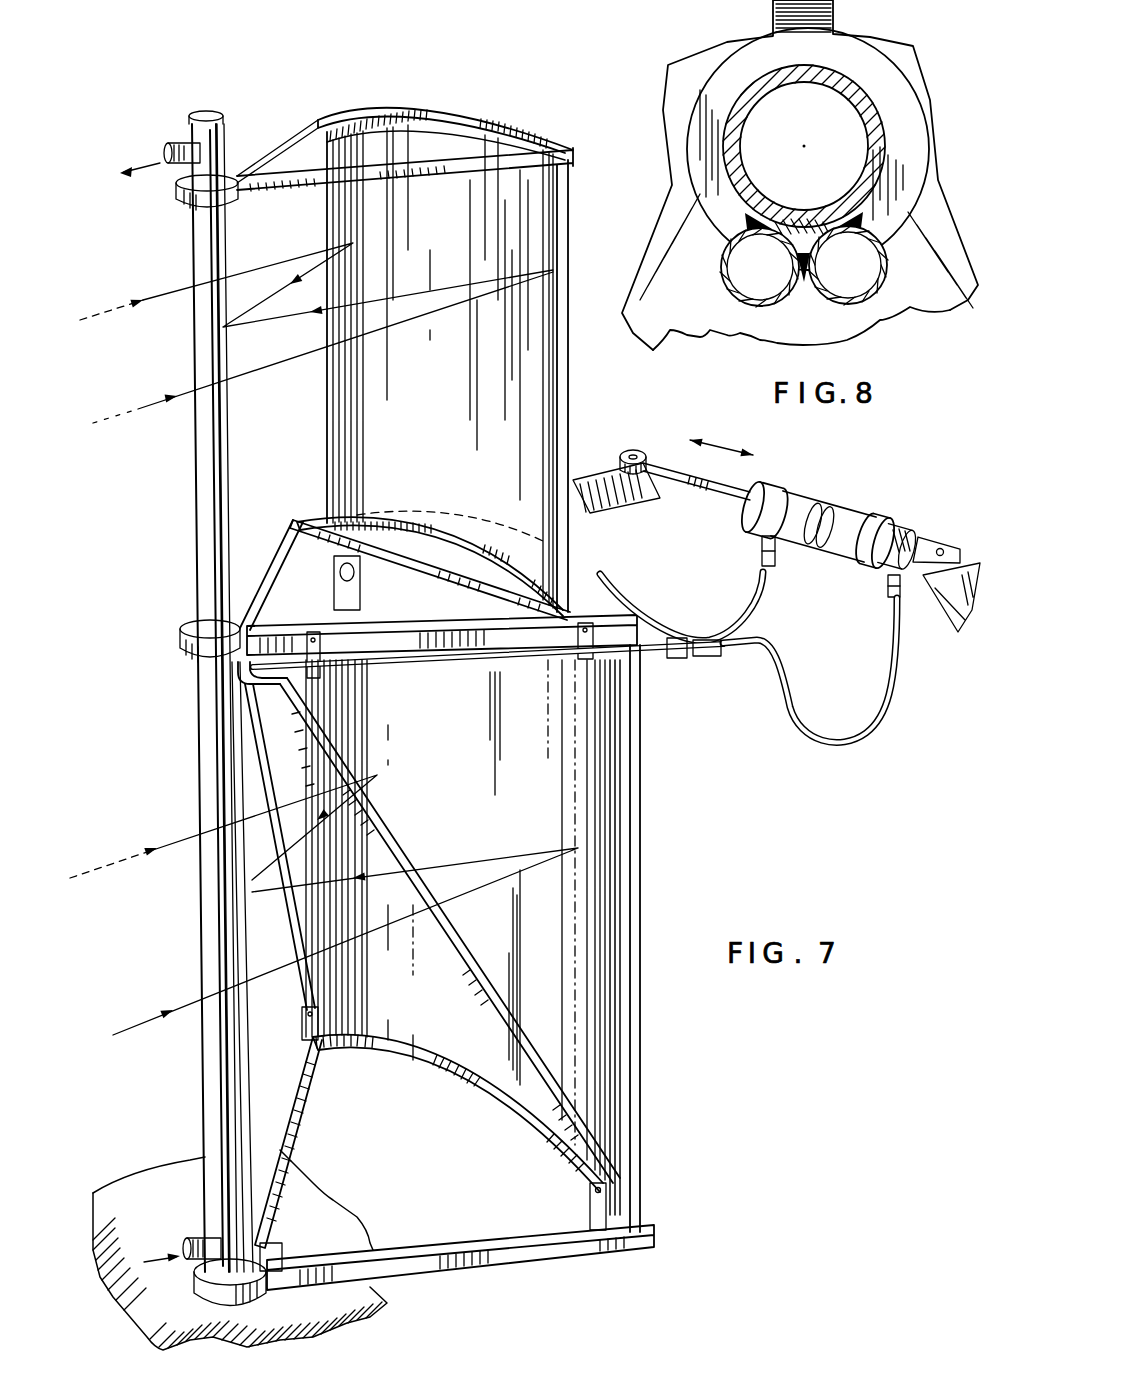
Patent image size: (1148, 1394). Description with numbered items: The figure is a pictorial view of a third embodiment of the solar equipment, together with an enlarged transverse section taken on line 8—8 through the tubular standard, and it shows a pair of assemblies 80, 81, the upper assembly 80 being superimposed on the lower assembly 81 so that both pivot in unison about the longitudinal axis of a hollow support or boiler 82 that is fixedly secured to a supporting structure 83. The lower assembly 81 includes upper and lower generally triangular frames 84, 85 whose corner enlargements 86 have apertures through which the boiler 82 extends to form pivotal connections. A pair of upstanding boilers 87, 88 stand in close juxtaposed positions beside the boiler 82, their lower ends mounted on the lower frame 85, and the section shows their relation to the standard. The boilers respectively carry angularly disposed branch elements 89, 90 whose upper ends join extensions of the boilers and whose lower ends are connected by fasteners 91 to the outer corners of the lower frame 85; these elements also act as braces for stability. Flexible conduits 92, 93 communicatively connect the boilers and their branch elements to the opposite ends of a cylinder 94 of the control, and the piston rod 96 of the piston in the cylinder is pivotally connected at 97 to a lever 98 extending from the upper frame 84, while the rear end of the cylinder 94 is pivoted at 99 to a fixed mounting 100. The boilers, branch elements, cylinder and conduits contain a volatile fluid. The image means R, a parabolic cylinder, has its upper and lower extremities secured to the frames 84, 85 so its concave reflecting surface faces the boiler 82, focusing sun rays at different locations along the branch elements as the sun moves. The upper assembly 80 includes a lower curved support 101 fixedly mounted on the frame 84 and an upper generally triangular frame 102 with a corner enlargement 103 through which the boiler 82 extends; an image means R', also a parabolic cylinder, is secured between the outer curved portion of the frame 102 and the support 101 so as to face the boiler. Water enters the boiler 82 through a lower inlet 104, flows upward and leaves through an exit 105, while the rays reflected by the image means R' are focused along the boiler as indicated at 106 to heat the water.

In FIG. 7, the upper assembly 80 is at (576, 236).
In FIG. 7, the lower assembly 81 is at (646, 908).
In FIG. 7, the boiler 82 is at (200, 800).
In FIG. 8, the boiler 82 is at (750, 95).
In FIG. 7, the supporting structure 83 is at (372, 1295).
In FIG. 8, the supporting structure 83 is at (770, 336).
In FIG. 7, the upper frame 84 is at (368, 625).
In FIG. 7, the lower frame 85 is at (566, 1247).
In FIG. 8, the lower frame 85 is at (935, 247).
In FIG. 7, the corner enlargements 86 is at (182, 645).
In FIG. 8, the corner enlargements 86 is at (698, 130).
In FIG. 7, the boiler 87 is at (238, 1105).
In FIG. 8, the boiler 87 is at (745, 307).
In FIG. 8, the boiler 88 is at (868, 300).
In FIG. 7, the branch element 89 is at (505, 1045).
In FIG. 7, the diagonal braces 90 is at (287, 913).
In FIG. 7, the fasteners 91 is at (318, 1042).
In FIG. 7, the flexible conduit 92 is at (822, 745).
In FIG. 7, the flexible conduit 93 is at (686, 615).
In FIG. 7, the cylinder 94 is at (850, 518).
In FIG. 7, the piston rod 96 is at (703, 503).
In FIG. 7, the pivot connection 97 is at (637, 450).
In FIG. 7, the lever 98 is at (592, 476).
In FIG. 7, the pivot 99 is at (942, 545).
In FIG. 7, the fixed mounting 100 is at (948, 620).
In FIG. 7, the lower curved support 101 is at (430, 532).
In FIG. 7, the upper frame 102 is at (407, 170).
In FIG. 7, the corner enlargement 103 is at (180, 200).
In FIG. 7, the lower inlet 104 is at (188, 1240).
In FIG. 7, the exit 105 is at (178, 144).
In FIG. 7, the focus 106 is at (226, 327).
In FIG. 7, the image means R is at (376, 937).
In FIG. 7, the image means R' is at (457, 363).
In FIG. 7, the section line 8 is at (200, 1030).